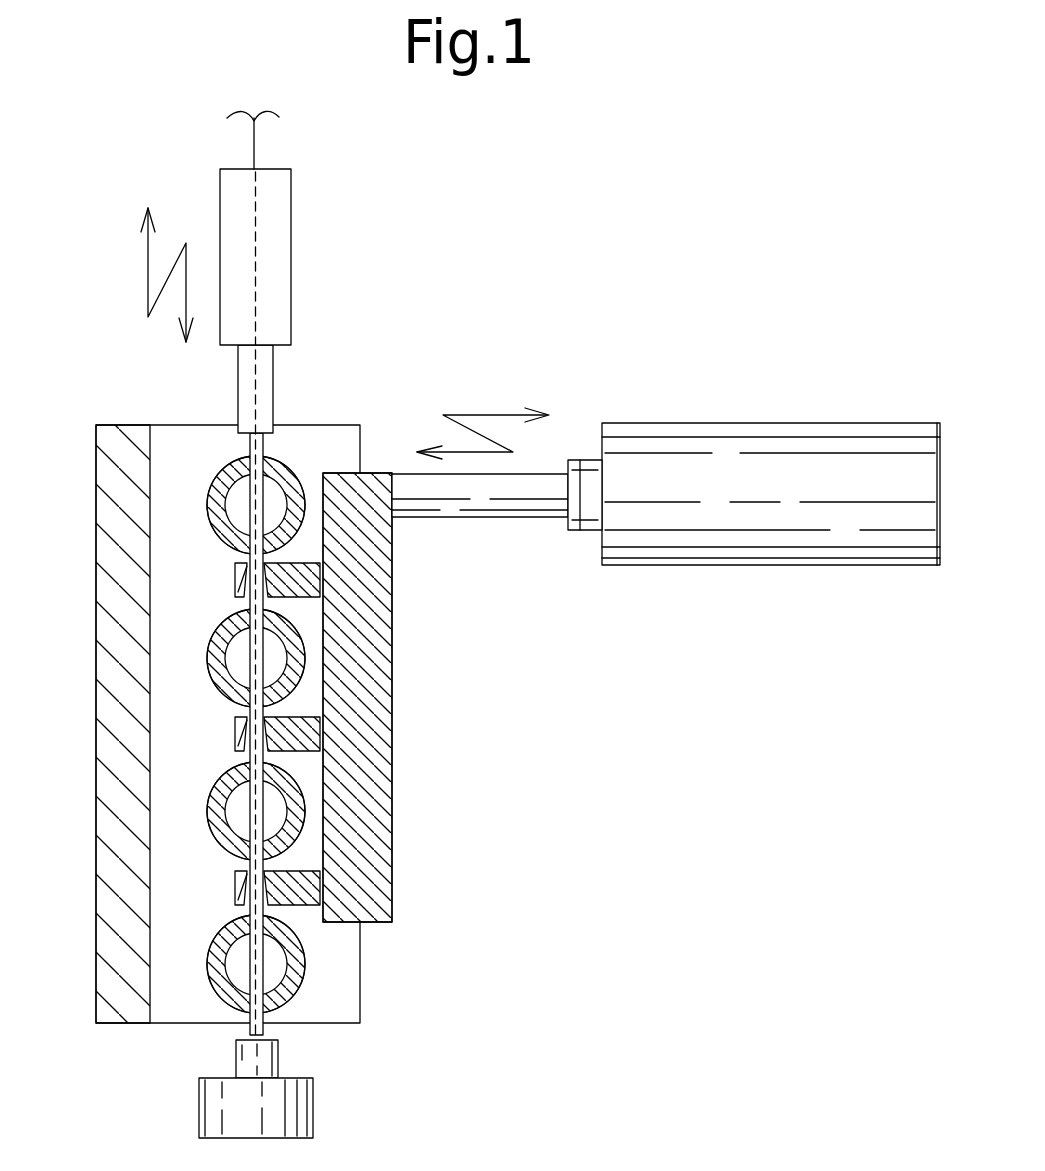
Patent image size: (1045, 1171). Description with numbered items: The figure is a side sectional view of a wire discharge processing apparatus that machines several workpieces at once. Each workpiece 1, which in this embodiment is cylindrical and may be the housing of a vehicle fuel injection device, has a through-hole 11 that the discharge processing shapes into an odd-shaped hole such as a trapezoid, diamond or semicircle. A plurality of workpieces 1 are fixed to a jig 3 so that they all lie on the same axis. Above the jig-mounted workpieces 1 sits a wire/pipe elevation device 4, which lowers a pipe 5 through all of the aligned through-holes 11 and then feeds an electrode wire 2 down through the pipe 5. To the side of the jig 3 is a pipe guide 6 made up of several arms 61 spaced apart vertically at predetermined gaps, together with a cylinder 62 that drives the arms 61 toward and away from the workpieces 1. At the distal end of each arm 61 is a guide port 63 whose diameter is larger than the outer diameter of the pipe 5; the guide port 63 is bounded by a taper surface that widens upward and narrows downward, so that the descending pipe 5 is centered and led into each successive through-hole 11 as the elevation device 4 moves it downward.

The workpiece 1 is at (211, 488).
The through-hole 11 is at (250, 456).
The electrode wire 2 is at (255, 382).
The jig 3 is at (96, 665).
The wire/pipe elevation device 4 is at (309, 187).
The pipe 5 is at (262, 968).
The pipe guide 6 is at (515, 538).
The arm 61 is at (300, 599).
The cylinder 62 is at (668, 423).
The guide port 63 is at (240, 590).